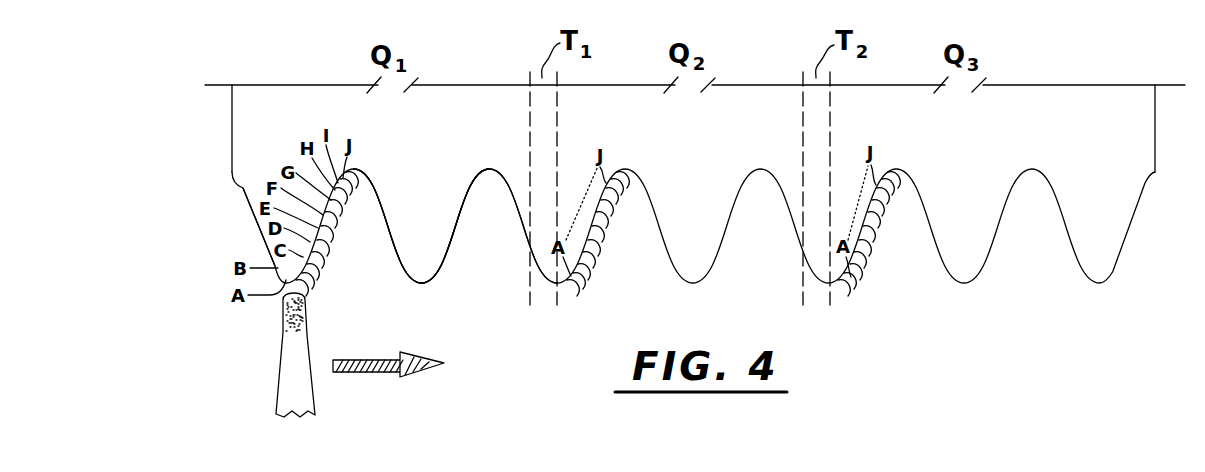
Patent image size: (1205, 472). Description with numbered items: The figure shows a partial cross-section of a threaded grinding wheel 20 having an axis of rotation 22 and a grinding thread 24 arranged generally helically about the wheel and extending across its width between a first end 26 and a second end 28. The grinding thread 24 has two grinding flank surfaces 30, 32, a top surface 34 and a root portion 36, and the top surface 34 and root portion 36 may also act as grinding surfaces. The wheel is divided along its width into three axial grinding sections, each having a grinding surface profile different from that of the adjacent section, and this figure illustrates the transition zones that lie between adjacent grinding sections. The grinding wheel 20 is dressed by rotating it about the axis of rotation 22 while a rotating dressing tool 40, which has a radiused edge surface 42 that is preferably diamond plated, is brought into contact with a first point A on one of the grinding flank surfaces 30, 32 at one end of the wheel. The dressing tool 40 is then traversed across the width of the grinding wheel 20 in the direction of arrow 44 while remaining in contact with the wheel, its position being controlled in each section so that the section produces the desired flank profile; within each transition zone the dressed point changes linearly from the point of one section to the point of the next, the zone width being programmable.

The threaded grinding wheel 20 is at (1138, 162).
The axis of rotation 22 is at (1163, 84).
The grinding thread 24 is at (258, 206).
The end 26 is at (232, 151).
The end 28 is at (1156, 117).
The grinding flank surface 30 is at (387, 240).
The grinding flank surface 32 is at (451, 247).
The top surface 34 is at (421, 284).
The root portion 36 is at (487, 172).
The dressing tool 40 is at (285, 383).
The radiused edge surface 42 is at (283, 310).
The arrow 44 is at (380, 373).